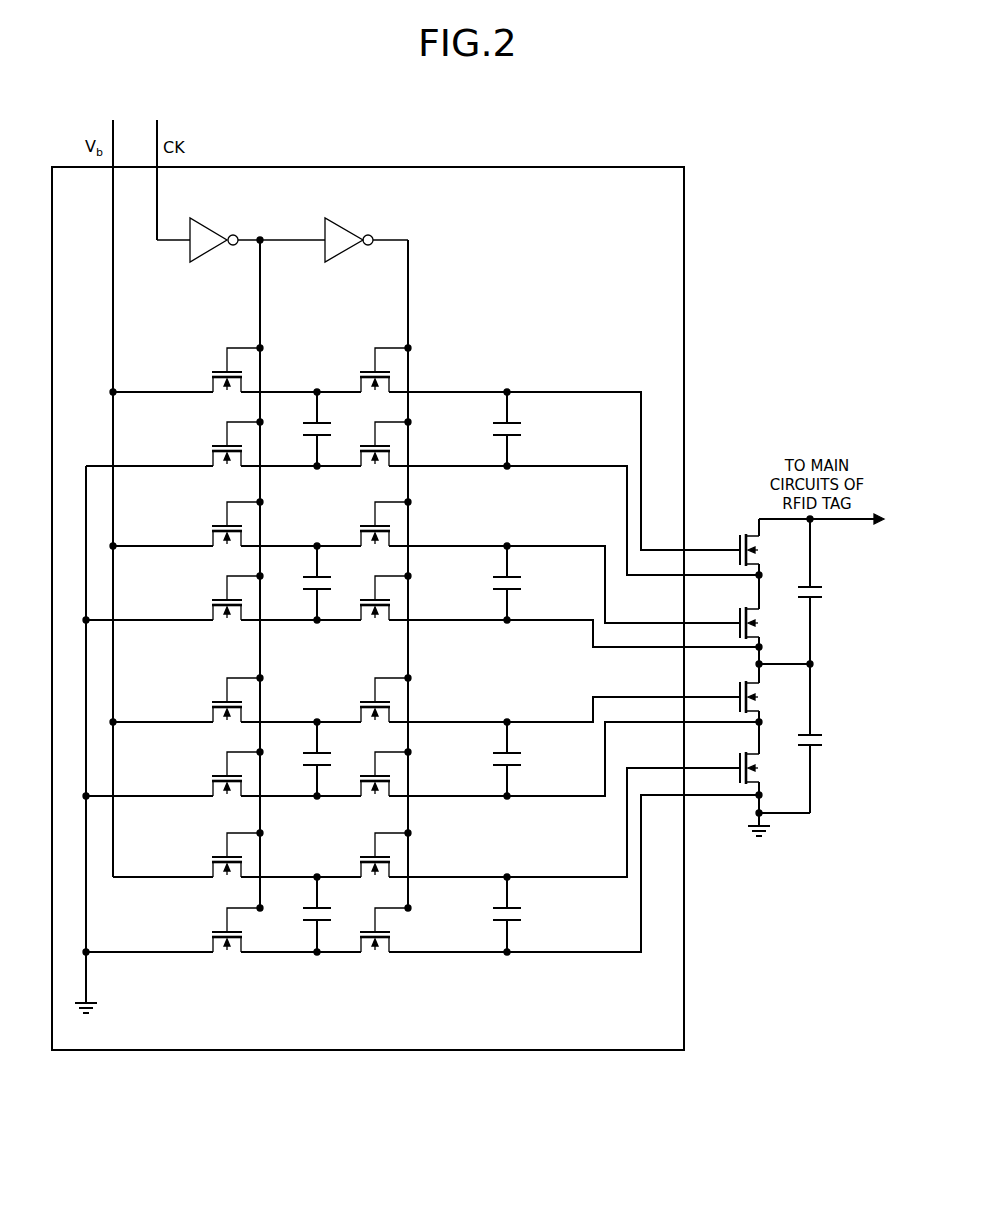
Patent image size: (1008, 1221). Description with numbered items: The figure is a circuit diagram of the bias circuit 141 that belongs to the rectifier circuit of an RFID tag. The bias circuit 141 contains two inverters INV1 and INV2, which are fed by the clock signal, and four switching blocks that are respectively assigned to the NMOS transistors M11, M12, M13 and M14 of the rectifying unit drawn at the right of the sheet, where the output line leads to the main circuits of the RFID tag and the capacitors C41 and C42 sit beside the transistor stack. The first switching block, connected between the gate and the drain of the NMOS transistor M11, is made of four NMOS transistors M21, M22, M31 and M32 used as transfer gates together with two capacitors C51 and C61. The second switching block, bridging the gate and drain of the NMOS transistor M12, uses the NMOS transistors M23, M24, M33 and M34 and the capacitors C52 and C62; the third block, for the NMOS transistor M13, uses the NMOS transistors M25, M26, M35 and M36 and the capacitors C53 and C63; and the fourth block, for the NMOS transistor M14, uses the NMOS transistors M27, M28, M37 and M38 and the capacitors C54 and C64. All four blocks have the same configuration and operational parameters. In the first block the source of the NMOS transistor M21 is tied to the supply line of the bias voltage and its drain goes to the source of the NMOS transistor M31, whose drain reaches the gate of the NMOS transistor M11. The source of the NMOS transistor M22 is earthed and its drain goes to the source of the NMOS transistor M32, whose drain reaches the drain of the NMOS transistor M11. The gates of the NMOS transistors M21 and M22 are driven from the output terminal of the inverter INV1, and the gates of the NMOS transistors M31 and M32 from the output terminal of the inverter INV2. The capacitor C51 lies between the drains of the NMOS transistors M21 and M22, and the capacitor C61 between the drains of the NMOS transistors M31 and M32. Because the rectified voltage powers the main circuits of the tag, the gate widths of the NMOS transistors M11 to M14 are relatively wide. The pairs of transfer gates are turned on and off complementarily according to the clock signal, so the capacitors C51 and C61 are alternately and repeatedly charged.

The bias circuit 141 is at (617, 167).
The inverter INV1 is at (210, 232).
The inverter INV2 is at (345, 232).
The NMOS transistor M21 is at (212, 369).
The NMOS transistor M22 is at (212, 443).
The NMOS transistor M23 is at (212, 523).
The NMOS transistor M24 is at (212, 597).
The NMOS transistor M25 is at (212, 699).
The NMOS transistor M26 is at (212, 773).
The NMOS transistor M27 is at (212, 854).
The NMOS transistor M28 is at (212, 929).
The NMOS transistor M31 is at (360, 369).
The NMOS transistor M32 is at (360, 443).
The NMOS transistor M33 is at (360, 523).
The NMOS transistor M34 is at (360, 597).
The NMOS transistor M35 is at (360, 699).
The NMOS transistor M36 is at (360, 773).
The NMOS transistor M37 is at (360, 854).
The NMOS transistor M38 is at (360, 929).
The capacitor C51 is at (305, 434).
The capacitor C52 is at (305, 588).
The capacitor C53 is at (305, 764).
The capacitor C54 is at (305, 919).
The capacitor C61 is at (526, 431).
The capacitor C62 is at (526, 585).
The capacitor C63 is at (526, 761).
The capacitor C64 is at (526, 916).
The NMOS transistor M11 is at (760, 557).
The NMOS transistor M12 is at (760, 630).
The NMOS transistor M13 is at (760, 704).
The NMOS transistor M14 is at (760, 775).
The capacitor C41 is at (826, 594).
The capacitor C42 is at (826, 742).